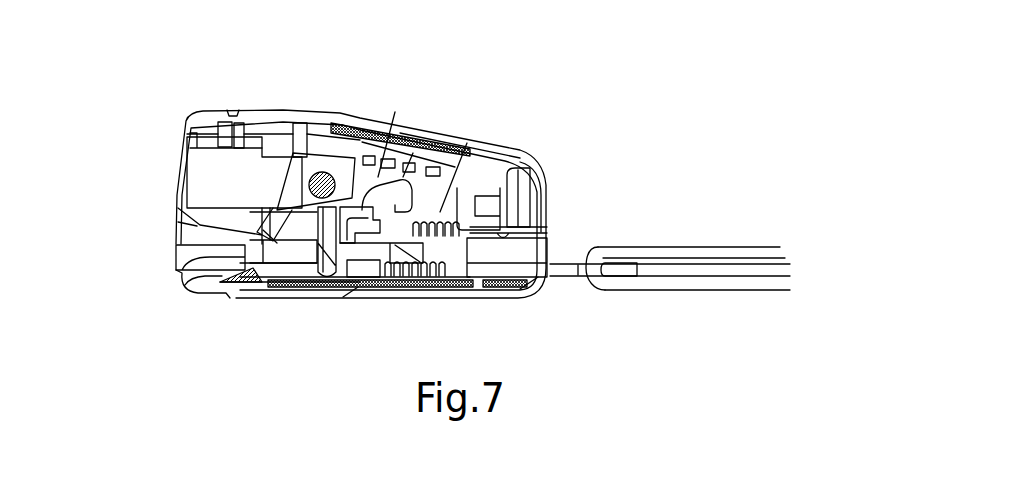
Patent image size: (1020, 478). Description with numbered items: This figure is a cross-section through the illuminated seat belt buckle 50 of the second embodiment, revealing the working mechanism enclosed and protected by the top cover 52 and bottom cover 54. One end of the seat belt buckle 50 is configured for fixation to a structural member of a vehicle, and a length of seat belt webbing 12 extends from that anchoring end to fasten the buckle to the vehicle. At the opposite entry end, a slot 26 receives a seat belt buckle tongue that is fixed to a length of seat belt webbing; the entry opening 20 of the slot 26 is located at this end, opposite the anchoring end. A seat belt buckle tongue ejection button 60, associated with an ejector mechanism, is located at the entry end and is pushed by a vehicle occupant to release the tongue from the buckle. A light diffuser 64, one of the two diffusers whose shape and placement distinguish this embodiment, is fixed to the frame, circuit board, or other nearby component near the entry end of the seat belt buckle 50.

The seat belt webbing 12 is at (648, 250).
The entry opening 20 is at (172, 254).
The slot 26 is at (180, 272).
The seat belt buckle 50 is at (539, 159).
The top cover 52 is at (401, 130).
The bottom cover 54 is at (388, 294).
The seat belt buckle tongue ejection button 60 is at (210, 167).
The light diffuser 64 is at (206, 286).